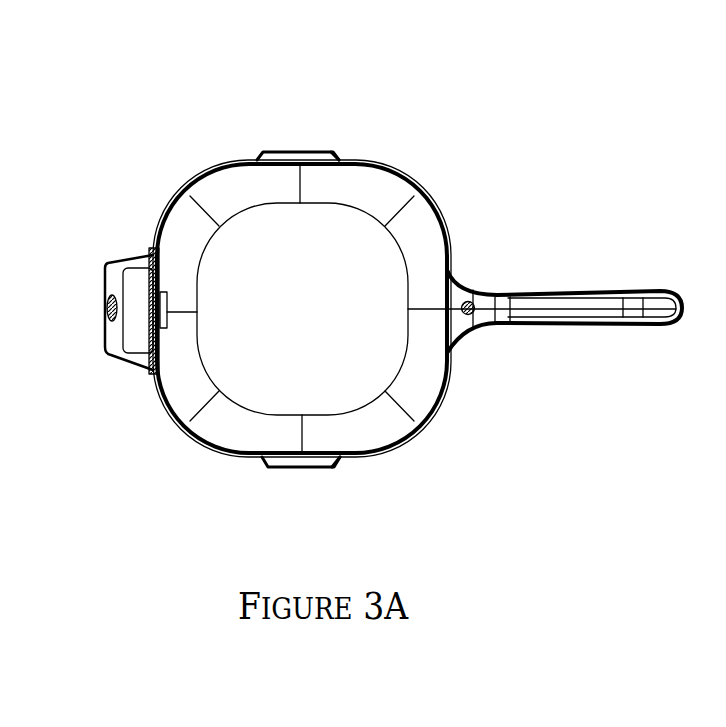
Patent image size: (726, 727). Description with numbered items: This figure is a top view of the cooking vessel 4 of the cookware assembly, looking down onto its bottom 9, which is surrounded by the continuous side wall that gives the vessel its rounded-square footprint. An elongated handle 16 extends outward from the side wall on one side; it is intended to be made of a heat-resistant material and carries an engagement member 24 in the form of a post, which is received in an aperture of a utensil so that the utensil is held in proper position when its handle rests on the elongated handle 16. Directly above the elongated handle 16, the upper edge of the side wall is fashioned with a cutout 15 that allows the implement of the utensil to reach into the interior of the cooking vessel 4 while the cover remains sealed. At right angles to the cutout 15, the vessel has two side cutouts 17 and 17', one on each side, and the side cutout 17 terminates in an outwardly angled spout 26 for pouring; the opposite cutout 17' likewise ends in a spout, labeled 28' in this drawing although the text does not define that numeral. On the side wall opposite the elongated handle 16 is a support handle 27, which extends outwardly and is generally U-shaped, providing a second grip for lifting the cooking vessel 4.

The cooking vessel 4 is at (437, 131).
The bottom 9 is at (388, 328).
The cutout 15 is at (451, 276).
The elongated handle 16 is at (575, 257).
The side cutout 17 is at (354, 497).
The side cutout 17' is at (345, 124).
The engagement member 24 is at (482, 328).
The spout 26 is at (310, 468).
The top pour spout 28' is at (298, 124).
The support handle 27 is at (121, 239).